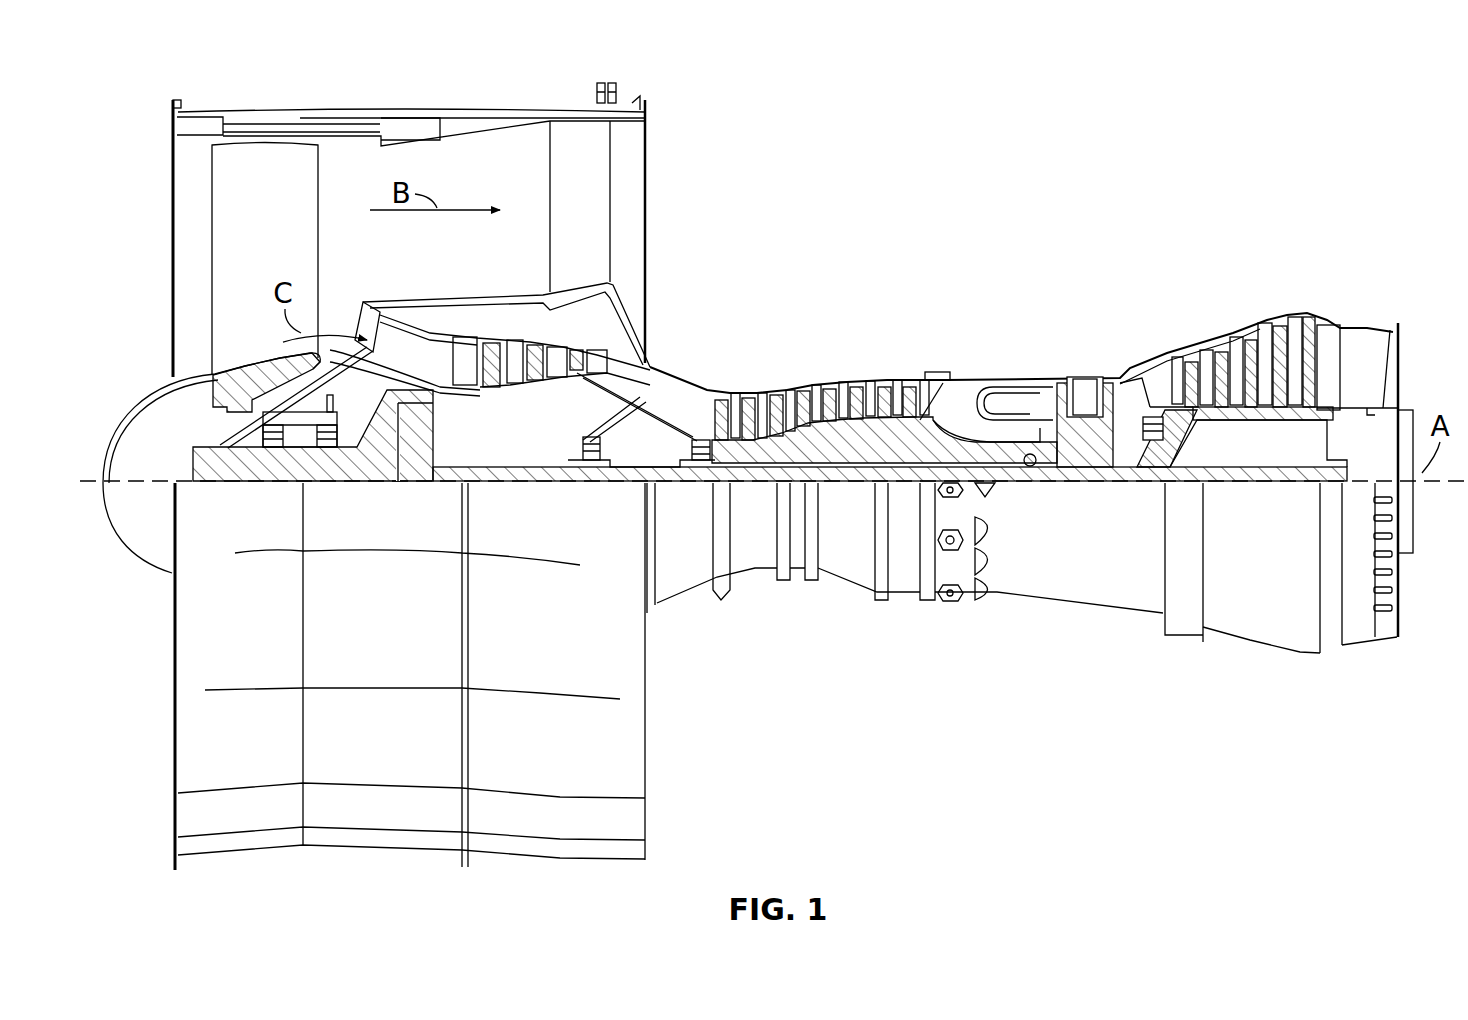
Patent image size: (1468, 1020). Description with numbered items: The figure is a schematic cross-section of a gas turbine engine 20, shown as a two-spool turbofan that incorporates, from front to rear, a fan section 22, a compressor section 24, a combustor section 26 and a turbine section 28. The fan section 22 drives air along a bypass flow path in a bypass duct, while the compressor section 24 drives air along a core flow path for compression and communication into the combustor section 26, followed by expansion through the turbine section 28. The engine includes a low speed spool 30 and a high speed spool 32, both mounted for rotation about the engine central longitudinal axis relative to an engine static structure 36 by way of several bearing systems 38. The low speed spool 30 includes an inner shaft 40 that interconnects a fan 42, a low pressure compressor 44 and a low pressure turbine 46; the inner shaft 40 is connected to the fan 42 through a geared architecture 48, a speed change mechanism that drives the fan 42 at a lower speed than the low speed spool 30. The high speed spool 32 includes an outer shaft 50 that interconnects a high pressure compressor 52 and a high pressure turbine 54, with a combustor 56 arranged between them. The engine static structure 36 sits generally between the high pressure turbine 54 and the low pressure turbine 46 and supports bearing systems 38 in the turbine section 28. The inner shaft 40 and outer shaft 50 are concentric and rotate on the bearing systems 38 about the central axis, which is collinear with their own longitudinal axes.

The gas turbine engine 20 is at (1222, 148).
The fan section 22 is at (371, 102).
The compressor section 24 is at (836, 336).
The combustor section 26 is at (1003, 334).
The turbine section 28 is at (1151, 320).
The low speed spool 30 is at (871, 486).
The high speed spool 32 is at (921, 427).
The engine static structure 36 is at (906, 602).
The bearing systems 38 is at (277, 442).
The inner shaft 40 is at (660, 484).
The fan 42 is at (259, 241).
The low pressure compressor 44 is at (566, 356).
The low pressure turbine 46 is at (1262, 346).
The geared architecture 48 is at (413, 445).
The outer shaft 50 is at (1030, 466).
The high pressure compressor 52 is at (825, 447).
The high pressure turbine 54 is at (1090, 376).
The combustor 56 is at (1012, 400).